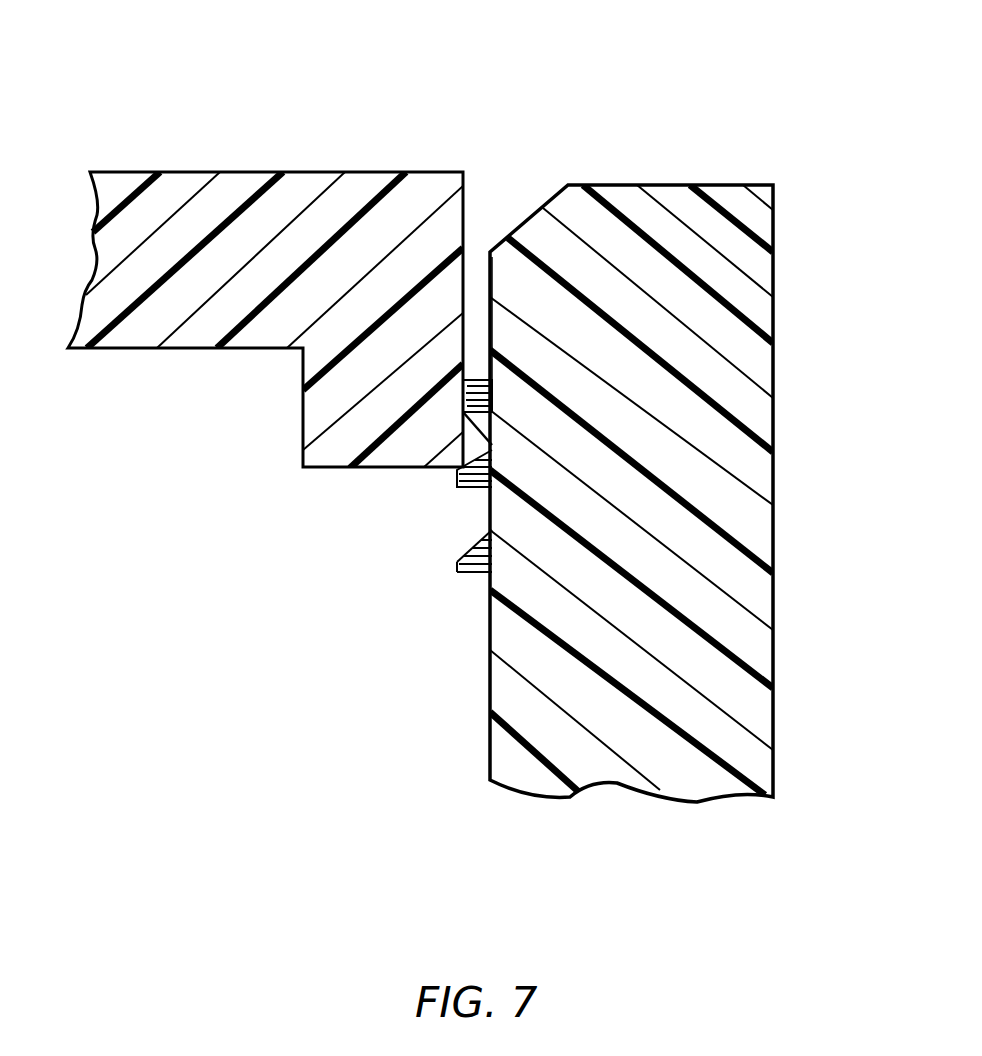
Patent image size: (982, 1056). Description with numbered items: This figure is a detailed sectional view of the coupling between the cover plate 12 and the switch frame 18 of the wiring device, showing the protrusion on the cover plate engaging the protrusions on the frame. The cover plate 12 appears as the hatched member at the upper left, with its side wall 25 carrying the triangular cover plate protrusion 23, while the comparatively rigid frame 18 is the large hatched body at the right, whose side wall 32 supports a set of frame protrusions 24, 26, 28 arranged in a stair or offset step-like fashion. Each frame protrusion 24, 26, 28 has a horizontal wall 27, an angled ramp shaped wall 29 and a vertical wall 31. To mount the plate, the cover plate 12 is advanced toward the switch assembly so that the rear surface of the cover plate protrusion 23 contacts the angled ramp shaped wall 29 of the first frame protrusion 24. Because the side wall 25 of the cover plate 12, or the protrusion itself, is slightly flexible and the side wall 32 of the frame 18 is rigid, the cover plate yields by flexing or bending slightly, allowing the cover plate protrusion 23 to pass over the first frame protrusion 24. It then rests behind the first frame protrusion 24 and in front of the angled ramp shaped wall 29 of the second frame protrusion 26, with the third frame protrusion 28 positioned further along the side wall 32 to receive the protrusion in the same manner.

The cover plate 12 is at (119, 358).
The switch frame 18 is at (777, 747).
The cover plate protrusion 23 is at (466, 446).
The first frame protrusion 24 is at (473, 375).
The side wall 25 is at (473, 187).
The second frame protrusion 26 is at (423, 527).
The horizontal wall 27 is at (467, 600).
The third frame protrusion 28 is at (402, 643).
The angled ramp shaped wall 29 is at (407, 580).
The vertical wall 31 is at (320, 622).
The side wall of the frame 32 is at (415, 778).